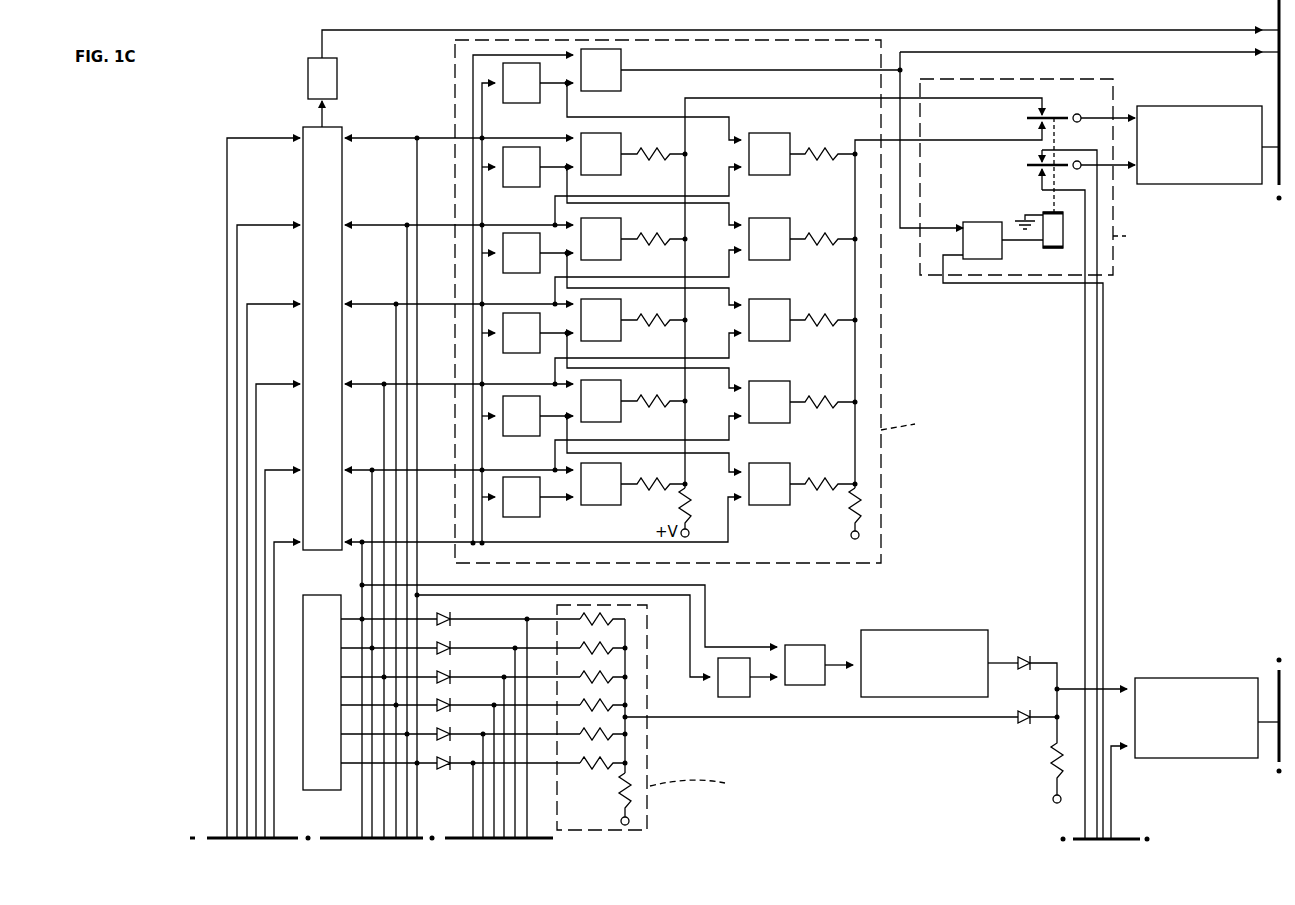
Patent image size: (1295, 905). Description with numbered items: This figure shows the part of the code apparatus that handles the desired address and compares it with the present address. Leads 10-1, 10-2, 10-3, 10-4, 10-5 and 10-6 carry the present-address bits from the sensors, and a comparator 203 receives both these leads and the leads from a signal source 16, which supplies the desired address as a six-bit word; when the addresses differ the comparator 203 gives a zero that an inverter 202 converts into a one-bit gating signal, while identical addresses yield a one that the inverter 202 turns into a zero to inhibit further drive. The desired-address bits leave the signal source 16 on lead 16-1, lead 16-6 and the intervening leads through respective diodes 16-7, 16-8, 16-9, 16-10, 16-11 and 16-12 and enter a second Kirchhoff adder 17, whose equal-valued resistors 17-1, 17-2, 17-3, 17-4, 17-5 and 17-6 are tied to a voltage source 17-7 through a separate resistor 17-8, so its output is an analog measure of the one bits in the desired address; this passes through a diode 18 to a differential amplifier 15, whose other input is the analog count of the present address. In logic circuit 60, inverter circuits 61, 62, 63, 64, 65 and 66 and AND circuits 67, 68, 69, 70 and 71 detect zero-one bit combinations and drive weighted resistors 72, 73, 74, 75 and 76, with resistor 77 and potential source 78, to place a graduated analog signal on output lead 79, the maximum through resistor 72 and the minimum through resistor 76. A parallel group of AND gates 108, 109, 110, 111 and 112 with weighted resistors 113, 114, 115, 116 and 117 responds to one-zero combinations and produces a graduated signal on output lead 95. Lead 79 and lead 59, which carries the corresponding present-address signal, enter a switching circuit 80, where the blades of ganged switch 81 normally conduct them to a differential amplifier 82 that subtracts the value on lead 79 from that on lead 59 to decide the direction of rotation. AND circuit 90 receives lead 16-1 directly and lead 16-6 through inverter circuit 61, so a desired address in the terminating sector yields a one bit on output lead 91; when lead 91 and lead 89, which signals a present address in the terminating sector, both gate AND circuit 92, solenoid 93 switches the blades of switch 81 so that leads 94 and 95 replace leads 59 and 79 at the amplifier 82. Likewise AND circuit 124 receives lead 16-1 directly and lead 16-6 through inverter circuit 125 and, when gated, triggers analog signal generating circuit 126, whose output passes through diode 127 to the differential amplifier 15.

The lead 10-1 is at (274, 808).
The lead 10-2 is at (265, 826).
The lead 10-3 is at (256, 413).
The lead 10-4 is at (247, 393).
The lead 10-5 is at (237, 372).
The lead 10-6 is at (227, 350).
The differential amplifier 15 is at (1211, 678).
The signal source 16 is at (313, 603).
The lead 16-1 is at (362, 808).
The lead 16-6 is at (473, 824).
The diode 16-7 is at (451, 620).
The diode 16-8 is at (451, 649).
The diode 16-9 is at (451, 678).
The diode 16-10 is at (448, 706).
The diode 16-11 is at (447, 735).
The diode 16-12 is at (447, 764).
The second Kirchhoff adder 17 is at (650, 763).
The resistor 17-1 is at (618, 617).
The resistor 17-2 is at (618, 646).
The resistor 17-3 is at (618, 675).
The resistor 17-4 is at (618, 703).
The resistor 17-5 is at (618, 732).
The resistor 17-6 is at (618, 761).
The voltage source 17-7 is at (621, 821).
The resistor 17-8 is at (632, 796).
The diode 18 is at (1021, 723).
The lead 59 is at (1076, 150).
The logic circuit 60 is at (883, 492).
The inverter circuit 61 is at (517, 102).
The inverter circuit 62 is at (517, 187).
The inverter circuit 63 is at (517, 273).
The inverter circuit 64 is at (517, 353).
The inverter circuit 65 is at (517, 436).
The inverter circuit 66 is at (517, 517).
The AND circuit 67 is at (621, 138).
The AND circuit 68 is at (621, 223).
The AND circuit 69 is at (621, 305).
The AND circuit 70 is at (621, 387).
The AND circuit 71 is at (621, 471).
The weighted resistor 72 is at (650, 160).
The weighted resistor 73 is at (652, 245).
The weighted resistor 74 is at (652, 326).
The weighted resistor 75 is at (652, 407).
The weighted resistor 76 is at (655, 490).
The resistor 77 is at (687, 518).
The potential source 78 is at (688, 538).
The output lead 79 is at (686, 243).
The switching circuit 80 is at (1113, 92).
The ganged switch 81 is at (1006, 164).
The differential amplifier 82 is at (1225, 106).
The output lead 89 is at (990, 284).
The AND circuit 90 is at (622, 57).
The output lead 91 is at (690, 71).
The AND circuit 92 is at (968, 222).
The solenoid 93 is at (1045, 250).
The lead 94 is at (1040, 190).
The output lead 95 is at (857, 361).
The AND gate 108 is at (790, 137).
The AND gate 109 is at (790, 222).
The AND gate 110 is at (790, 304).
The AND gate 111 is at (790, 387).
The AND gate 112 is at (790, 469).
The weighted resistor 113 is at (824, 163).
The weighted resistor 114 is at (824, 248).
The weighted resistor 115 is at (823, 329).
The weighted resistor 116 is at (823, 411).
The weighted resistor 117 is at (818, 490).
The AND circuit 124 is at (800, 686).
The inverter circuit 125 is at (745, 658).
The analog signal generating circuit 126 is at (862, 631).
The diode 127 is at (1026, 657).
The inverter 202 is at (308, 66).
The comparator 203 is at (306, 130).